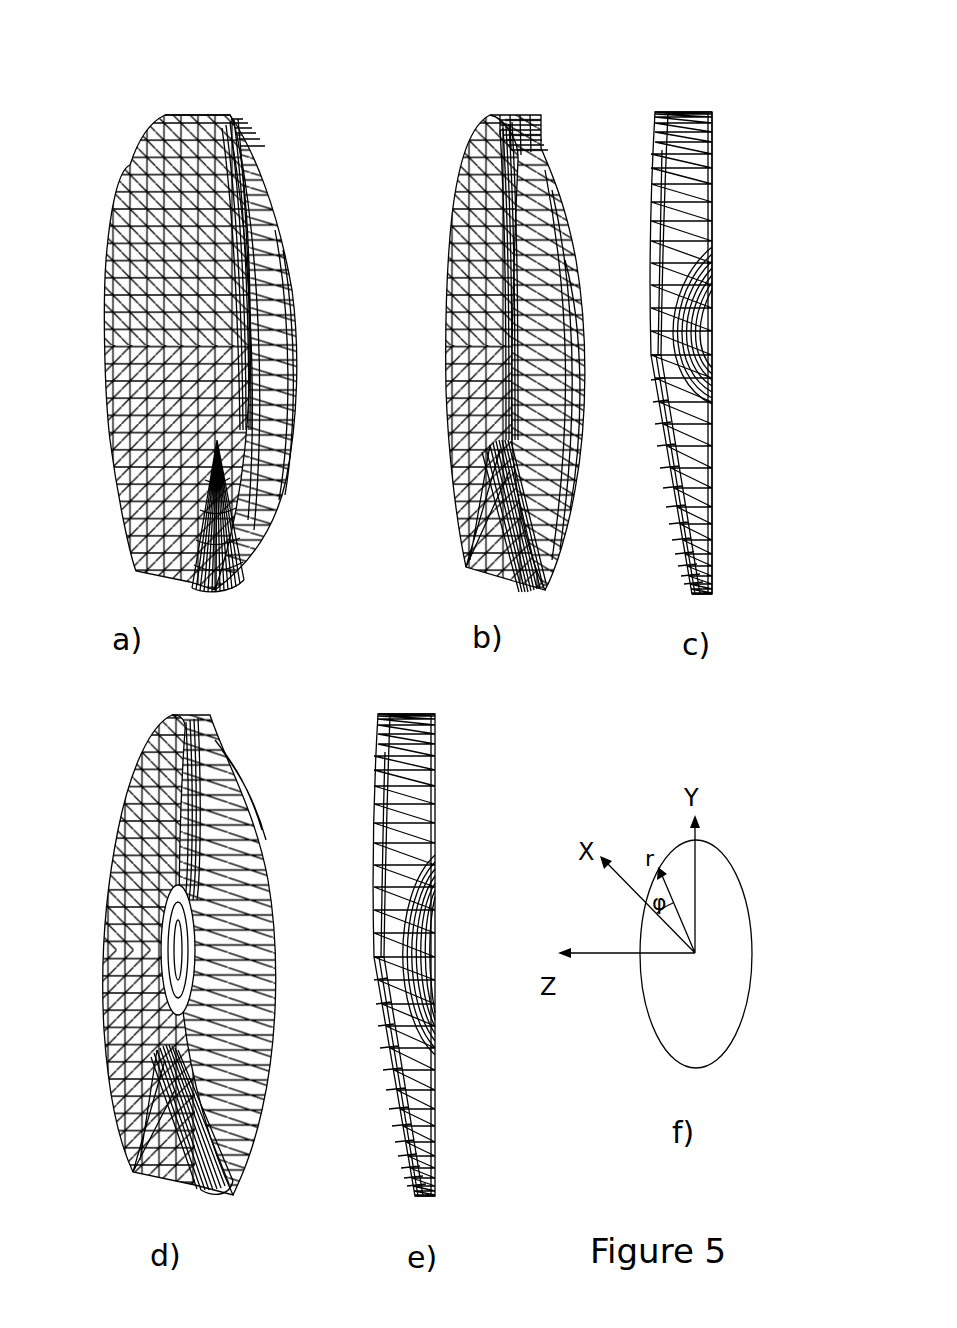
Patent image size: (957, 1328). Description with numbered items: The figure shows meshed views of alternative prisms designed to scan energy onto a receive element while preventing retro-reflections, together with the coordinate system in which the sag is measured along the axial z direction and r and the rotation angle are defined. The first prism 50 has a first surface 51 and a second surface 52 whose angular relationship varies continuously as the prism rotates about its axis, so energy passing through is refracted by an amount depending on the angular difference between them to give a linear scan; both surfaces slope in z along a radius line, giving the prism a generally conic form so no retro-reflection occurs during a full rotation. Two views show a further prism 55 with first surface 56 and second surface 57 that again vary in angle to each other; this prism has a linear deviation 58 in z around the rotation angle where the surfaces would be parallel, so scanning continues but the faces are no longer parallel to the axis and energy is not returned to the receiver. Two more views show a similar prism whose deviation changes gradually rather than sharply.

In FIG. 5a, the first prism 50 is at (215, 310).
In FIG. 5a, the first surface 51 is at (140, 198).
In FIG. 5a, the second surface 52 is at (283, 258).
In FIG. 5b, the prism 55 is at (521, 305).
In FIG. 5c, the prism 55 is at (711, 304).
In FIG. 5b, the first surface 56 is at (470, 176).
In FIG. 5c, the first surface 56 is at (655, 196).
In FIG. 5b, the second surface 57 is at (580, 368).
In FIG. 5c, the second surface 57 is at (712, 183).
In FIG. 5b, the linear deviation 58 is at (545, 158).
In FIG. 5c, the linear deviation 58 is at (712, 298).